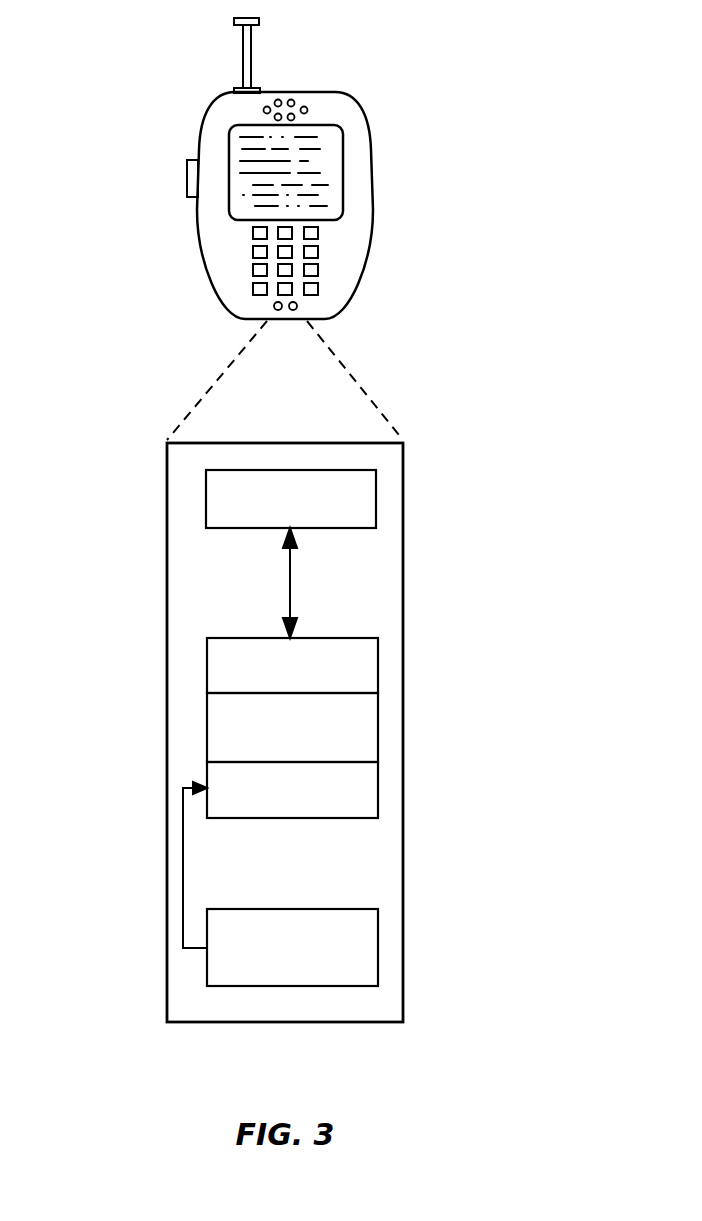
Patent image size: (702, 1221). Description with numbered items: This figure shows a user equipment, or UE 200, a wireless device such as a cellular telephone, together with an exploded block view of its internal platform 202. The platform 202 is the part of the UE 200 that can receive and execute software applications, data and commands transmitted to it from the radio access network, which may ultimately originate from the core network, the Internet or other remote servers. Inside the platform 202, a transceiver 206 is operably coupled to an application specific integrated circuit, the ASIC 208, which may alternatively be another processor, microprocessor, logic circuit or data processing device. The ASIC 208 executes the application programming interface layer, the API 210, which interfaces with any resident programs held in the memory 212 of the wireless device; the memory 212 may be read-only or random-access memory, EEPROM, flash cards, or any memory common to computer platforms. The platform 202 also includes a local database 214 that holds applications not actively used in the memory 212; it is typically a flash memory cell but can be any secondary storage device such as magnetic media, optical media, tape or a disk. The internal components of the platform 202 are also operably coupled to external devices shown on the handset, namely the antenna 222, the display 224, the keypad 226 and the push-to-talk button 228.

The user equipment 200 is at (350, 295).
The platform 202 is at (167, 637).
The transceiver 206 is at (376, 500).
The application specific integrated circuit 208 is at (378, 673).
The application programming interface 210 is at (378, 722).
The memory 212 is at (378, 790).
The local database 214 is at (378, 930).
The antenna 222 is at (252, 34).
The display 224 is at (343, 158).
The keypad 226 is at (318, 252).
The push-to-talk button 228 is at (187, 171).